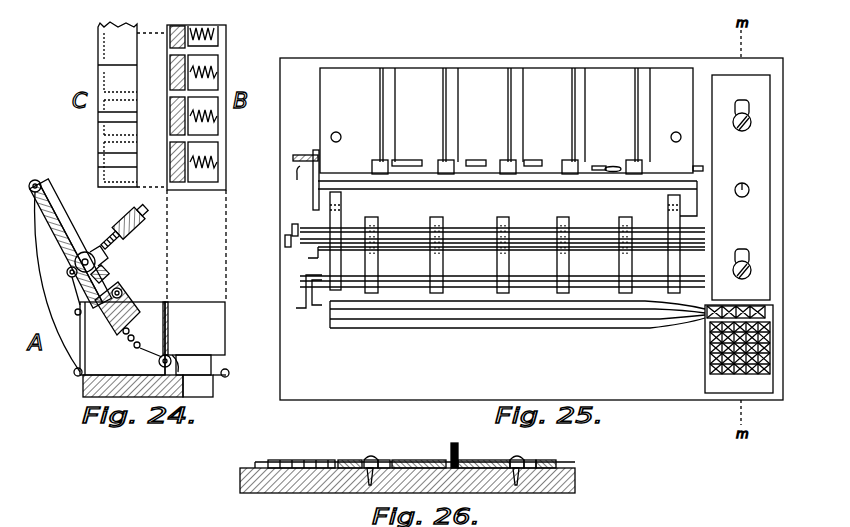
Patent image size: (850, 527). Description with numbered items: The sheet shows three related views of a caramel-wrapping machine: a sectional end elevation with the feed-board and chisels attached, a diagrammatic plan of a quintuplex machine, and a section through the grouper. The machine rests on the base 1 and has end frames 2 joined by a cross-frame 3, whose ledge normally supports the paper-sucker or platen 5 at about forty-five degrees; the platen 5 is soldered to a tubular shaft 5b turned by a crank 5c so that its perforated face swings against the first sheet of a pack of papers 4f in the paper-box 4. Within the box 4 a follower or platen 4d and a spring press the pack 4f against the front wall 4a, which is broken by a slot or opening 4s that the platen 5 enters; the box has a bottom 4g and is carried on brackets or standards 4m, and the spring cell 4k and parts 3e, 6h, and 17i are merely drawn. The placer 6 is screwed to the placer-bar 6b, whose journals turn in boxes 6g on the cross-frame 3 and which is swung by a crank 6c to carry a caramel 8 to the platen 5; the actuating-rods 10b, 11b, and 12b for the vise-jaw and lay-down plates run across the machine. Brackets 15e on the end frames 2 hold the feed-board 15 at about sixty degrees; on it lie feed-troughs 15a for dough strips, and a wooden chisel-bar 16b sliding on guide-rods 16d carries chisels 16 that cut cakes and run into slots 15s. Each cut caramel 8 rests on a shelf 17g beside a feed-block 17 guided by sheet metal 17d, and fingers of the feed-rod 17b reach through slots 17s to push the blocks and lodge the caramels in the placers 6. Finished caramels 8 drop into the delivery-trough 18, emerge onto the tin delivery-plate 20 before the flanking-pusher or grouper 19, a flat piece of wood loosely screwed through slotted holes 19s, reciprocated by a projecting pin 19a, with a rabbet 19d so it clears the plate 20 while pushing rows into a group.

In FIG. 24, the base 1 is at (156, 383).
In FIG. 25, the base 1 is at (531, 229).
In FIG. 26, the base 1 is at (572, 482).
In FIG. 24, the end frames 2 is at (119, 339).
In FIG. 25, the end frames 2 is at (340, 258).
In FIG. 24, the cross-frame 3 is at (106, 322).
In FIG. 24, the rollers 3e is at (125, 325).
In FIG. 24, the paper-box 4 is at (194, 338).
In FIG. 24, the front wall 4a is at (169, 132).
In FIG. 24, the follower or platen 4d is at (188, 172).
In FIG. 24, the pack of papers 4f is at (173, 36).
In FIG. 24, the bottom of the box 4g is at (100, 72).
In FIG. 24, the spring cell 4k is at (203, 40).
In FIG. 24, the brackets or standards 4m is at (196, 358).
In FIG. 24, the slot or opening 4s is at (170, 71).
In FIG. 24, the paper-sucker or platen 5 is at (170, 304).
In FIG. 25, the paper-sucker or platen 5 is at (498, 255).
In FIG. 25, the tubular shaft 5b is at (600, 276).
In FIG. 25, the crank 5c is at (304, 291).
In FIG. 24, the gripper or placer 6 is at (85, 262).
In FIG. 25, the gripper or placer 6 is at (378, 172).
In FIG. 25, the placer-bar 6b is at (528, 178).
In FIG. 25, the crank 6c is at (304, 173).
In FIG. 24, the boxes 6g is at (123, 293).
In FIG. 24, the pawl 6h is at (108, 279).
In FIG. 24, the caramel 8 is at (102, 257).
In FIG. 25, the caramel 8 is at (708, 352).
In FIG. 26, the caramel 8 is at (288, 460).
In FIG. 25, the actuating-rod 10b is at (550, 250).
In FIG. 25, the actuating-rod 11b is at (420, 228).
In FIG. 25, the actuating-rod 12b is at (494, 248).
In FIG. 24, the feed-board 15 is at (38, 182).
In FIG. 25, the feed-board 15 is at (506, 120).
In FIG. 24, the feed-troughs 15a is at (55, 190).
In FIG. 25, the feed-troughs 15a is at (392, 98).
In FIG. 24, the brackets 15e is at (65, 291).
In FIG. 25, the slot 15s is at (560, 155).
In FIG. 24, the chisel 16 is at (113, 240).
In FIG. 24, the chisel-bar 16b is at (128, 216).
In FIG. 25, the guide-rods 16d is at (340, 135).
In FIG. 25, the feed-block 17 is at (407, 166).
In FIG. 24, the feed-rod 17b is at (70, 268).
In FIG. 25, the feed-rod 17b is at (296, 175).
In FIG. 25, the sheet-metal guide 17d is at (405, 160).
In FIG. 25, the shelf 17g is at (450, 174).
In FIG. 25, the tab 17i is at (698, 150).
In FIG. 25, the slots 17s is at (599, 166).
In FIG. 24, the delivery-trough 18 is at (207, 370).
In FIG. 25, the delivery-trough 18 is at (517, 314).
In FIG. 25, the flanking-pusher or grouper 19 is at (741, 187).
In FIG. 26, the flanking-pusher or grouper 19 is at (560, 462).
In FIG. 25, the projecting pin 19a is at (748, 176).
In FIG. 26, the projecting pin 19a is at (458, 452).
In FIG. 26, the rabbet 19d is at (348, 460).
In FIG. 25, the slotted holes 19s is at (740, 100).
In FIG. 26, the slotted holes 19s is at (379, 458).
In FIG. 25, the delivery-plate 20 is at (739, 349).
In FIG. 26, the delivery-plate 20 is at (283, 455).